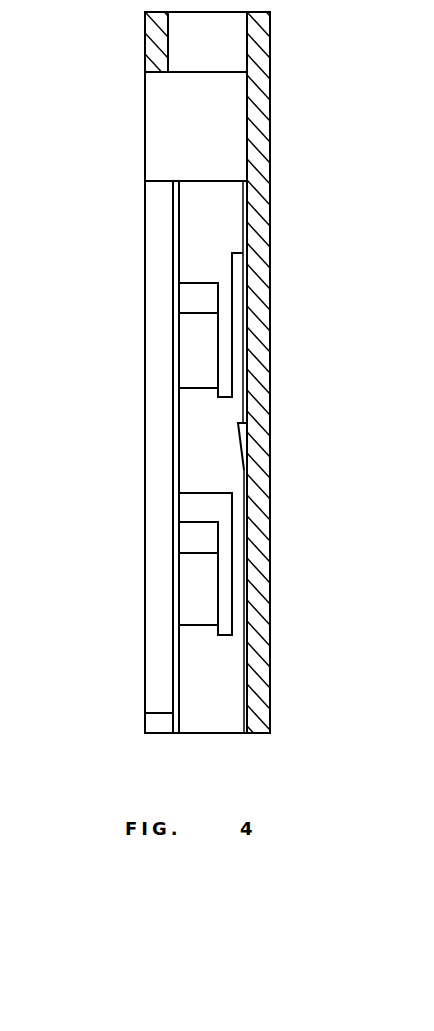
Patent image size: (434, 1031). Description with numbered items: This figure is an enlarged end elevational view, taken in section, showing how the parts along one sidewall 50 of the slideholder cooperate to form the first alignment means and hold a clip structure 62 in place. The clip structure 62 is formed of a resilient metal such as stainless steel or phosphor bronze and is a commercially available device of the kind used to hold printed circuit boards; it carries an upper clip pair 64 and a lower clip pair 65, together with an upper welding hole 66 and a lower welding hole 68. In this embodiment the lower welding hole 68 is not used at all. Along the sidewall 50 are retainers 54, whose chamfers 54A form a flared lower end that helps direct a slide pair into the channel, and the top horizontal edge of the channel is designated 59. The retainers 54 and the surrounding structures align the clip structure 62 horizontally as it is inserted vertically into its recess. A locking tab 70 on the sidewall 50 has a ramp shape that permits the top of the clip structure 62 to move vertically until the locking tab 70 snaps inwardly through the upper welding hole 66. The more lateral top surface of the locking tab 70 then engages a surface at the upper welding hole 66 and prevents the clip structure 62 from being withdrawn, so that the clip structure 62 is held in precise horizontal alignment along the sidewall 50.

The sidewall 50 is at (260, 222).
The top horizontal edge of channel 59 is at (162, 71).
The retainer 54 is at (158, 433).
The chamfer 54A is at (155, 723).
The upper clip pair 64 is at (224, 302).
The lower clip pair 65 is at (223, 598).
The upper welding hole 66 is at (245, 412).
The locking tab 70 is at (240, 442).
The clip structure 62 is at (245, 512).
The lower welding hole 68 is at (245, 668).